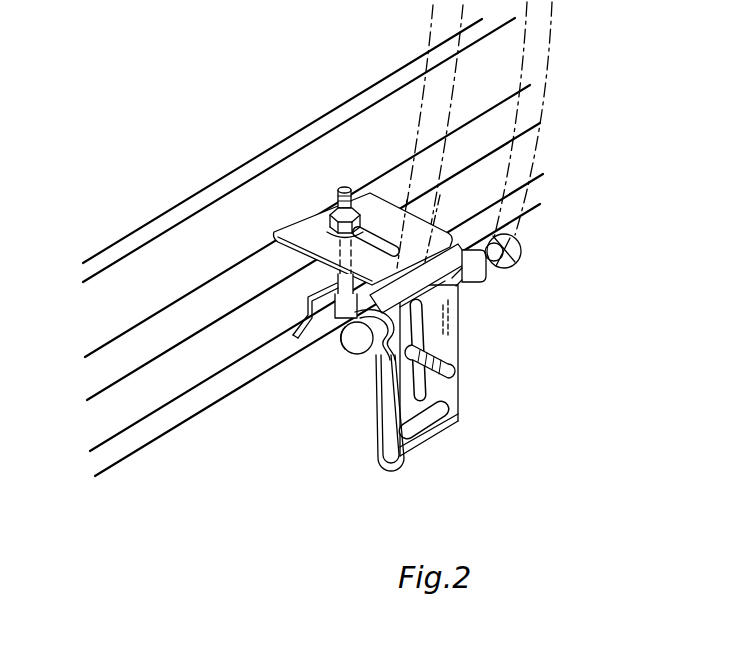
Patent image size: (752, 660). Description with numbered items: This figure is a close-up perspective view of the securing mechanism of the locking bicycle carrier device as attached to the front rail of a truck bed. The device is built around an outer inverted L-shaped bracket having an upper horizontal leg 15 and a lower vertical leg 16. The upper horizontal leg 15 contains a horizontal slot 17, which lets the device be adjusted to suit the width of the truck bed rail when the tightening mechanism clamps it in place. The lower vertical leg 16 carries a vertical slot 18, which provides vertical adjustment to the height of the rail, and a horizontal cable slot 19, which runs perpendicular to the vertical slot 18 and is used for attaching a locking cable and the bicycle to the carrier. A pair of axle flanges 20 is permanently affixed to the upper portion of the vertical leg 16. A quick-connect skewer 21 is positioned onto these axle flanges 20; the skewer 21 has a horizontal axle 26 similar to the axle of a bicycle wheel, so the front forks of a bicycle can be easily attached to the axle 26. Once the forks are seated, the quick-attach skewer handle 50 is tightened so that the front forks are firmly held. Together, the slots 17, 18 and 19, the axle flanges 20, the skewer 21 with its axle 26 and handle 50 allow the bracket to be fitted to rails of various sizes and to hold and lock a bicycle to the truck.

The upper horizontal leg 15 is at (302, 236).
The lower vertical leg 16 is at (458, 354).
The horizontal slot 17 is at (364, 198).
The vertical slot 18 is at (418, 385).
The horizontal cable slot 19 is at (417, 423).
The axle flanges 20 is at (345, 334).
The quick-connect skewer 21 is at (346, 352).
The horizontal axle 26 is at (447, 290).
The quick-attach skewer handle 50 is at (390, 465).